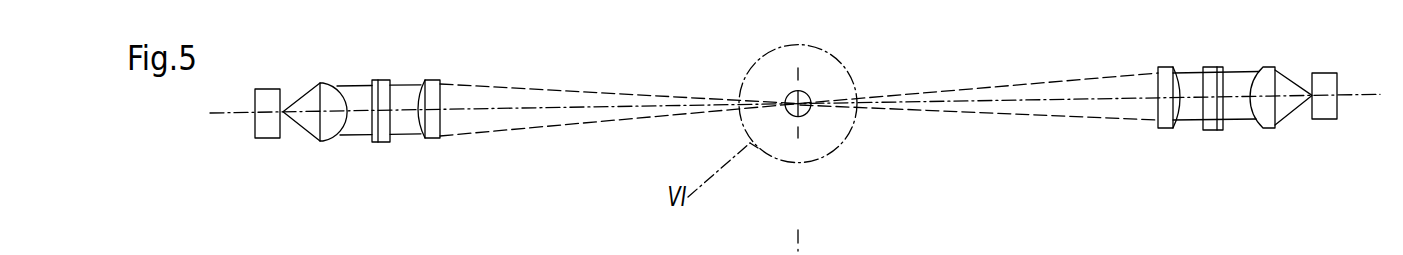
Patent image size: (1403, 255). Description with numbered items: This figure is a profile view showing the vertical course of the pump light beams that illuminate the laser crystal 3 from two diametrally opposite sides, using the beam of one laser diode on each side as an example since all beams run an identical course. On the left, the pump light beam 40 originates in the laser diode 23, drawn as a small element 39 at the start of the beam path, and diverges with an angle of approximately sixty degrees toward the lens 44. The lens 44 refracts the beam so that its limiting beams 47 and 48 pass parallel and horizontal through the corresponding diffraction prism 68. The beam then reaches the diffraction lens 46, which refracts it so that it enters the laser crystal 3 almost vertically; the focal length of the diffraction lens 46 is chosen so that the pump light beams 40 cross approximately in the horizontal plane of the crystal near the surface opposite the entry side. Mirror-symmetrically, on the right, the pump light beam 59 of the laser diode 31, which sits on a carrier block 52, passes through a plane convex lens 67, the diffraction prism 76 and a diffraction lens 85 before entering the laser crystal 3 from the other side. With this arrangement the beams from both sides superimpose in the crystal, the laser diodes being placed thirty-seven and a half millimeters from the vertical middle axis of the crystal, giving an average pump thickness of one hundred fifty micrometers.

The laser crystal 3 is at (804, 98).
The laser diode 23 is at (284, 117).
The laser diode 31 is at (1303, 103).
The light source 39 is at (264, 98).
The pump light beam 40 is at (540, 117).
The lens 44 is at (322, 82).
The diffraction lens 46 is at (437, 80).
The limiting beam 47 is at (408, 85).
The limiting beam 48 is at (404, 135).
The carrier block 52 is at (1327, 80).
The pump light beam 59 is at (1032, 110).
The plane convex lens 67 is at (1273, 68).
The diffraction prism 68 is at (385, 82).
The diffraction prism 76 is at (1210, 128).
The diffraction lens 85 is at (1163, 70).